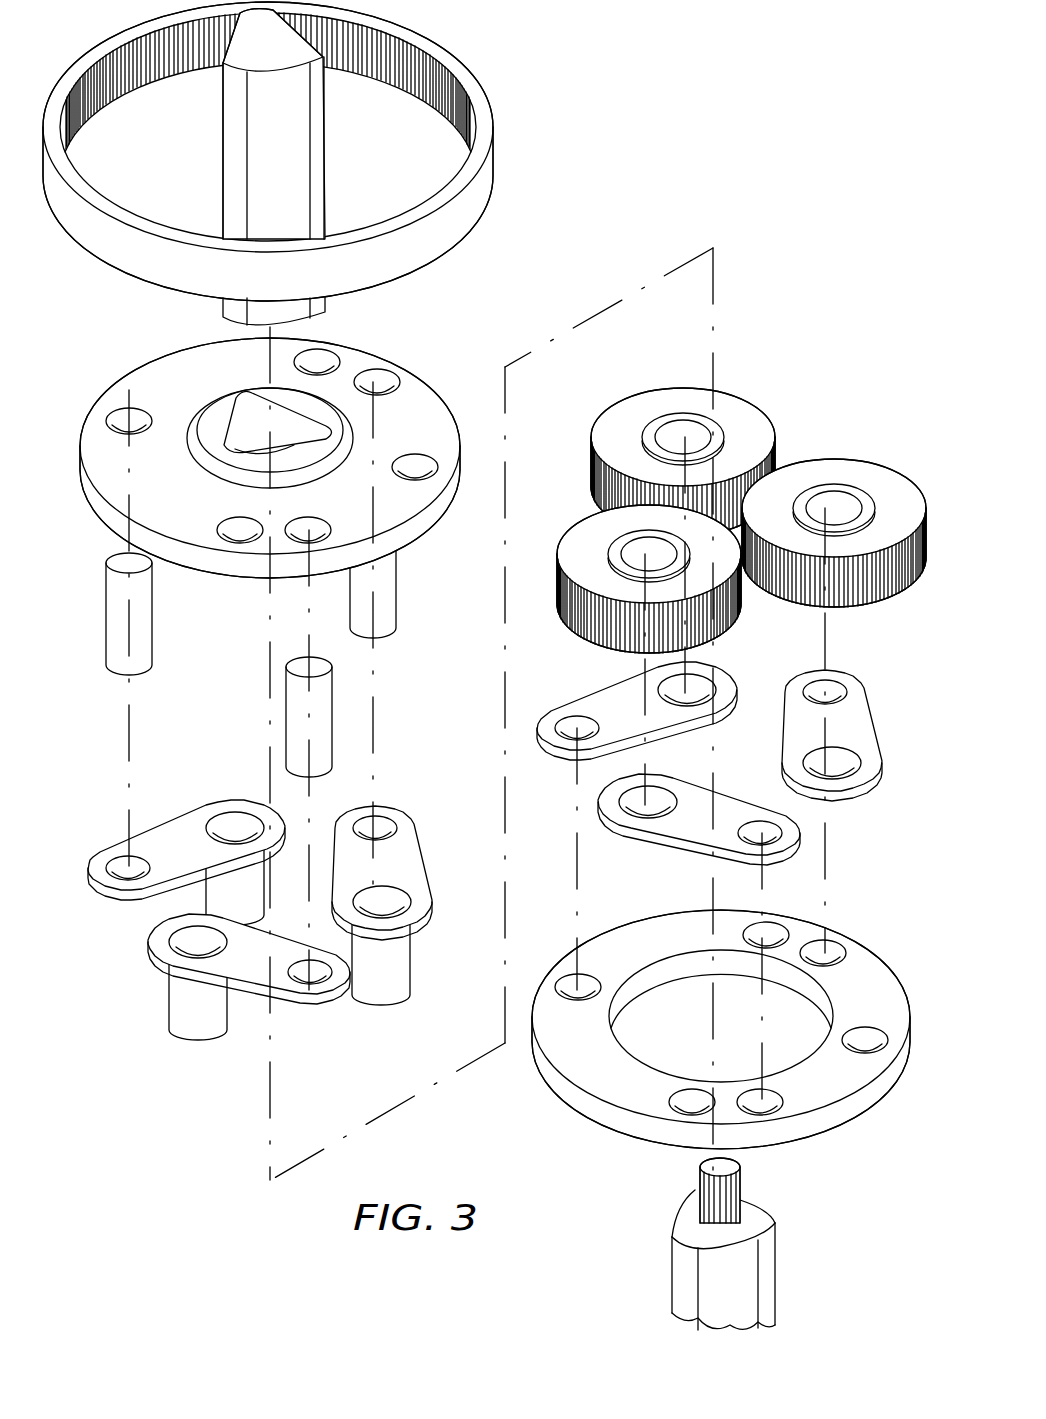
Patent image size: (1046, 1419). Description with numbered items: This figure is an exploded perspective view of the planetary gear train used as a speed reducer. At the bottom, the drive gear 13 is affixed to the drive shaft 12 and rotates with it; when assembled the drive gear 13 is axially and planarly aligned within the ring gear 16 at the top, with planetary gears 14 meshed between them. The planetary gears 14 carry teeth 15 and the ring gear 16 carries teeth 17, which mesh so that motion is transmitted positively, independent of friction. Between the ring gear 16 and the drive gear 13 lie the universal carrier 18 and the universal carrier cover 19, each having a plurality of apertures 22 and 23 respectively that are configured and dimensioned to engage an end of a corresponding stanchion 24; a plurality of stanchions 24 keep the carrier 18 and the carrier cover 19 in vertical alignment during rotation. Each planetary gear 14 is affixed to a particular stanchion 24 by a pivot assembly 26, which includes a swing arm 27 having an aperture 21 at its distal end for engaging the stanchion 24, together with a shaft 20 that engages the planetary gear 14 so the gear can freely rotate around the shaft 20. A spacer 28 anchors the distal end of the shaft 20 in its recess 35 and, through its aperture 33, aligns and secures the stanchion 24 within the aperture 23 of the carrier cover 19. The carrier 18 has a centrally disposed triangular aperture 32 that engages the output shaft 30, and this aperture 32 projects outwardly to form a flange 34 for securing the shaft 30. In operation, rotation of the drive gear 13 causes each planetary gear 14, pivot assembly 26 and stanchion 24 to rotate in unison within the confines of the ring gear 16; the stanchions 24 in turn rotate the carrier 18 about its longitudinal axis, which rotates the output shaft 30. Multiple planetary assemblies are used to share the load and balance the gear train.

The drive shaft 12 is at (755, 1267).
The drive gear 13 is at (735, 1192).
The planetary gear 14 is at (733, 412).
The teeth 15 is at (770, 452).
The ring gear 16 is at (480, 200).
The teeth 17 is at (461, 168).
The universal carrier 18 is at (130, 380).
The universal carrier cover 19 is at (873, 973).
The shaft 20 is at (248, 878).
The aperture 21 is at (115, 855).
The apertures 22 is at (110, 417).
The apertures 23 is at (577, 980).
The stanchion 24 is at (137, 618).
The pivot assembly 26 is at (276, 900).
The swing arm 27 is at (157, 840).
The spacer 28 is at (730, 759).
The output shaft 30 is at (300, 159).
The triangular aperture 32 is at (245, 415).
The aperture 33 is at (577, 722).
The flange 34 is at (313, 403).
The recess 35 is at (697, 680).